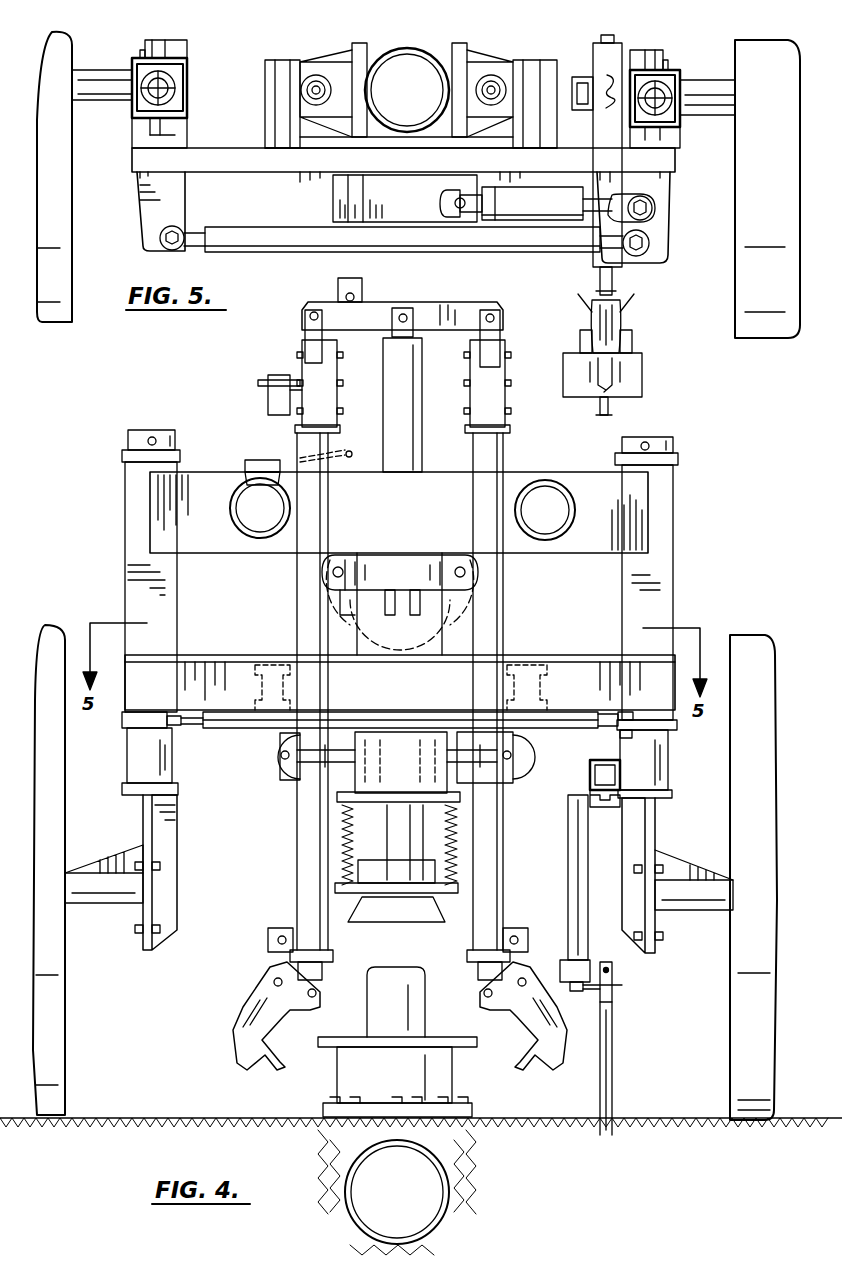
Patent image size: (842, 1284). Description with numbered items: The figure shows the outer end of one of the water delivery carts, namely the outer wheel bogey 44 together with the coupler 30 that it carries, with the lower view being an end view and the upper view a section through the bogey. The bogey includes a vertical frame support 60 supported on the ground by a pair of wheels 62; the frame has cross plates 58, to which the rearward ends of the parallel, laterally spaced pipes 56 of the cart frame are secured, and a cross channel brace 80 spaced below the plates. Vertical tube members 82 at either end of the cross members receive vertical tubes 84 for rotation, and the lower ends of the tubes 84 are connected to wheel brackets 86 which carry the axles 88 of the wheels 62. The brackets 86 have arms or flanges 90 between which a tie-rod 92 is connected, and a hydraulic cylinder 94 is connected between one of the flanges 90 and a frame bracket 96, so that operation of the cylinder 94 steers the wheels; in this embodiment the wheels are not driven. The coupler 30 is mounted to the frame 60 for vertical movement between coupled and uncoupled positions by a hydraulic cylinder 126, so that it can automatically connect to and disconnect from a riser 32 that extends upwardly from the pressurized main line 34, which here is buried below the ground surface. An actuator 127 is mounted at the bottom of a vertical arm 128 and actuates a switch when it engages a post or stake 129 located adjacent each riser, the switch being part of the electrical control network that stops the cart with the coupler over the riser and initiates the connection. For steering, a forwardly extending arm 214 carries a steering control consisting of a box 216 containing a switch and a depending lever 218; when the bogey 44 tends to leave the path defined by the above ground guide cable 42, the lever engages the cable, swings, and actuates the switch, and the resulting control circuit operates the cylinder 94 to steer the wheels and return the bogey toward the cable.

In FIG. 5, the coupler 30 is at (517, 50).
In FIG. 4, the coupler 30 is at (390, 674).
In FIG. 4, the riser 32 is at (333, 1078).
In FIG. 4, the pressurized main line 34 is at (345, 1230).
In FIG. 5, the above ground guide cable 42 is at (600, 408).
In FIG. 4, the above ground guide cable 42 is at (614, 970).
In FIG. 5, the outer wheel bogey 44 is at (394, 210).
In FIG. 4, the outer wheel bogey 44 is at (683, 516).
In FIG. 4, the pipes 56 is at (273, 540).
In FIG. 4, the cross plates 58 is at (220, 545).
In FIG. 4, the vertical frame support 60 is at (386, 590).
In FIG. 5, the wheels 62 is at (60, 277).
In FIG. 4, the wheels 62 is at (62, 1008).
In FIG. 5, the cross channel brace 80 is at (208, 158).
In FIG. 4, the cross channel brace 80 is at (228, 665).
In FIG. 5, the vertical tube members 82 is at (190, 100).
In FIG. 4, the vertical tube members 82 is at (170, 612).
In FIG. 5, the vertical tubes 84 is at (175, 82).
In FIG. 4, the vertical tubes 84 is at (160, 760).
In FIG. 5, the wheel brackets 86 is at (165, 40).
In FIG. 4, the wheel brackets 86 is at (168, 863).
In FIG. 5, the axles 88 is at (100, 100).
In FIG. 4, the axles 88 is at (103, 900).
In FIG. 5, the arms or flanges 90 is at (145, 215).
In FIG. 4, the arms or flanges 90 is at (145, 722).
In FIG. 5, the tie-rod 92 is at (468, 242).
In FIG. 4, the tie-rod 92 is at (558, 726).
In FIG. 5, the hydraulic cylinder 94 is at (535, 210).
In FIG. 5, the frame bracket 96 is at (335, 192).
In FIG. 4, the hydraulic cylinder 126 is at (405, 434).
In FIG. 4, the actuator 127 is at (580, 993).
In FIG. 4, the vertical arm 128 is at (575, 870).
In FIG. 4, the post or stake 129 is at (609, 1071).
In FIG. 5, the forwardly extending arms 214 is at (598, 268).
In FIG. 4, the forwardly extending arms 214 is at (590, 773).
In FIG. 5, the boxes 216 is at (640, 379).
In FIG. 5, the depending levers 218 is at (626, 340).